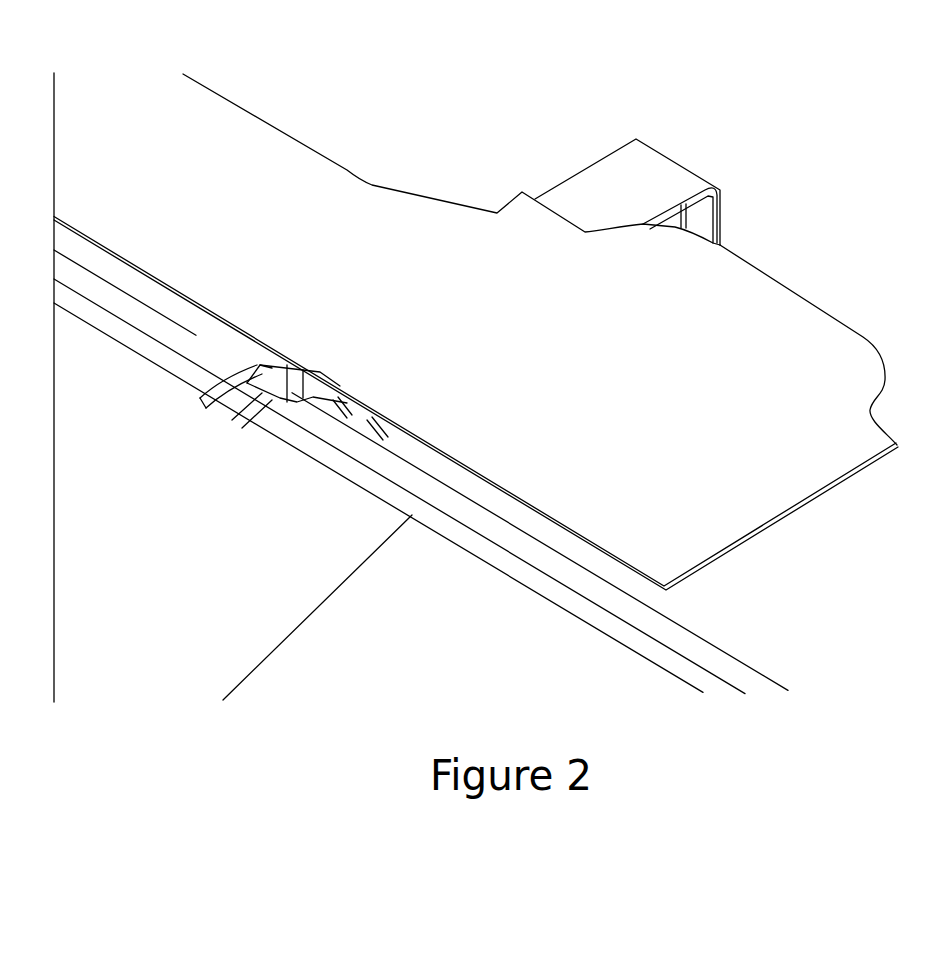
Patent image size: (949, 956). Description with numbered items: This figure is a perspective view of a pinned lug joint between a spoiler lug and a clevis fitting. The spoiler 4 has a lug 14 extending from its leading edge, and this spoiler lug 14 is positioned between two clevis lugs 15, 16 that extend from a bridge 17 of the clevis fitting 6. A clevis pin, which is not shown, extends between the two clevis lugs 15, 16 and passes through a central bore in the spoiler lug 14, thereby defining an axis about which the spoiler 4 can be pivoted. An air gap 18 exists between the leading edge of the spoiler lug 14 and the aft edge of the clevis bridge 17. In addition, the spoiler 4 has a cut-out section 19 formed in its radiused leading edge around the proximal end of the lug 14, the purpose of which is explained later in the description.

The spoiler 4 is at (222, 610).
The clevis fitting 6 is at (305, 416).
The spoiler lug 14 is at (262, 402).
The clevis lug 15 is at (290, 402).
The clevis lug 16 is at (258, 381).
The bridge 17 is at (304, 384).
The air gap 18 is at (282, 368).
The cut-out section 19 is at (192, 400).